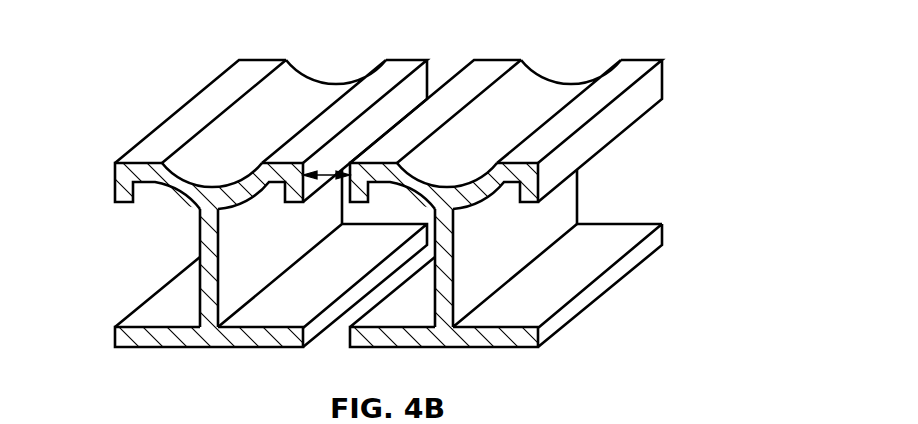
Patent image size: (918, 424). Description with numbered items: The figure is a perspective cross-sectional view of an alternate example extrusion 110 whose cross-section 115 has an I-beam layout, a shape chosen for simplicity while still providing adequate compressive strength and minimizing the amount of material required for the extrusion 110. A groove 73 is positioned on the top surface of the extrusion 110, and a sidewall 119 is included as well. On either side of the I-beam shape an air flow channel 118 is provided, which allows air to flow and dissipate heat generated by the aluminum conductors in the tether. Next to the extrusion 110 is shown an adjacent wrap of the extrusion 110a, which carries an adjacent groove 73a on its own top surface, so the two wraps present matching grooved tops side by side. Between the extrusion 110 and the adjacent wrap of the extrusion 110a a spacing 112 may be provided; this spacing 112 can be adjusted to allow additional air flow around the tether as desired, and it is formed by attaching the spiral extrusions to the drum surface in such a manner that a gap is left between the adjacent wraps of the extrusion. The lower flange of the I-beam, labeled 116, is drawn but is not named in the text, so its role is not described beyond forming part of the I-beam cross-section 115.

The extrusion 110 is at (470, 204).
The adjacent wrap of the extrusion 110a is at (244, 187).
The groove 73 is at (509, 101).
The adjacent groove 73a is at (292, 108).
The sidewall 119 is at (393, 110).
The air flow channel 118 is at (679, 194).
The cross-section 115 is at (208, 253).
The bottom flange 116 is at (272, 340).
The spacing 112 is at (332, 177).